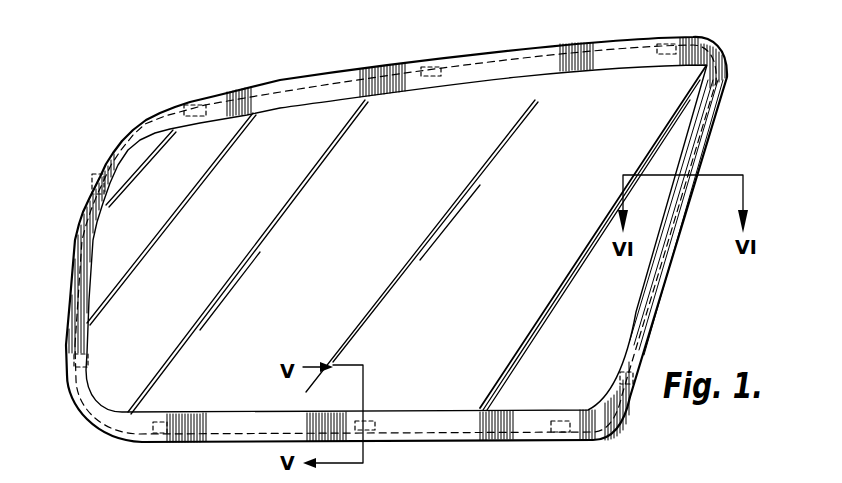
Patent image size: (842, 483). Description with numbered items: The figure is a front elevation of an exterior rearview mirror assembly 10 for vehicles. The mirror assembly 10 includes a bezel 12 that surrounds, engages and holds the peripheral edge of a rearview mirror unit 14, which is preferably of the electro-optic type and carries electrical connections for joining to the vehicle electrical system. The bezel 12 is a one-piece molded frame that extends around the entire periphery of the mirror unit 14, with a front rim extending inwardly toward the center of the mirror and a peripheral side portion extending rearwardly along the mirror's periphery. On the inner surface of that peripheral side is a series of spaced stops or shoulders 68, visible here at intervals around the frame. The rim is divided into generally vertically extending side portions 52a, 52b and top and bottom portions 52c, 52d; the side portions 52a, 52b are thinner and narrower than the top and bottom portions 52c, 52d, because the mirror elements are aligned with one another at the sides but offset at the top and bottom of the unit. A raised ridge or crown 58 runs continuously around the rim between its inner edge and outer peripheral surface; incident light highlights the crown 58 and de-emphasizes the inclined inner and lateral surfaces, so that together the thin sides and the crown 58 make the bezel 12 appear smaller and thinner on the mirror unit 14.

The exterior rearview mirror assembly 10 is at (425, 258).
The bezel 12 is at (301, 75).
The rearview mirror unit 14 is at (346, 264).
The side portion of bezel rim 52a is at (640, 312).
The side portion of bezel rim 52b is at (90, 273).
The top portion of bezel rim 52c is at (330, 104).
The bottom portion of bezel rim 52d is at (427, 417).
The crown 58 is at (455, 476).
The stops 68 is at (422, 79).